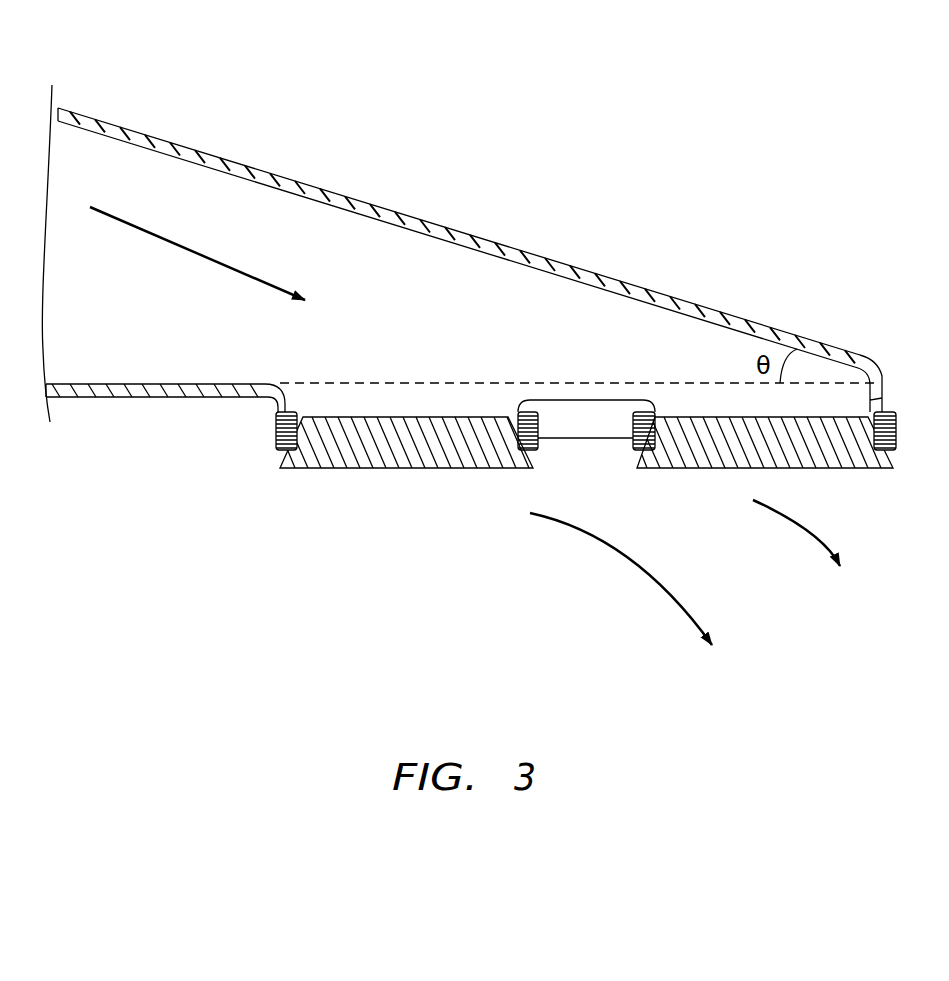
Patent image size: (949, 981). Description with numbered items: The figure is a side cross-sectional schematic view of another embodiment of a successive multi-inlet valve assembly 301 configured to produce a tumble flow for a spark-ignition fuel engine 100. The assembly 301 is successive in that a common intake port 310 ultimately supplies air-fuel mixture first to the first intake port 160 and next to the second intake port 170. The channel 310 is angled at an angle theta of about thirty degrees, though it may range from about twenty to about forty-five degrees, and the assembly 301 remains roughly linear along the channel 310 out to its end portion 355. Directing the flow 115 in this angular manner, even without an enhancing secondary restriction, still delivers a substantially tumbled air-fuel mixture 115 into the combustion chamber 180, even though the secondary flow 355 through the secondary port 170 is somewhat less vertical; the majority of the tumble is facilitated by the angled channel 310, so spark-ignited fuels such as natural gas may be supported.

The spark-ignition fuel engine 100 is at (614, 115).
The flow 115 is at (158, 239).
The first intake port 160 is at (368, 468).
The second intake port 170 is at (852, 468).
The combustion chamber 180 is at (392, 659).
The successive multi-inlet valve assembly 301 is at (354, 198).
The common intake port 310 is at (211, 215).
The end portion 355 is at (614, 280).